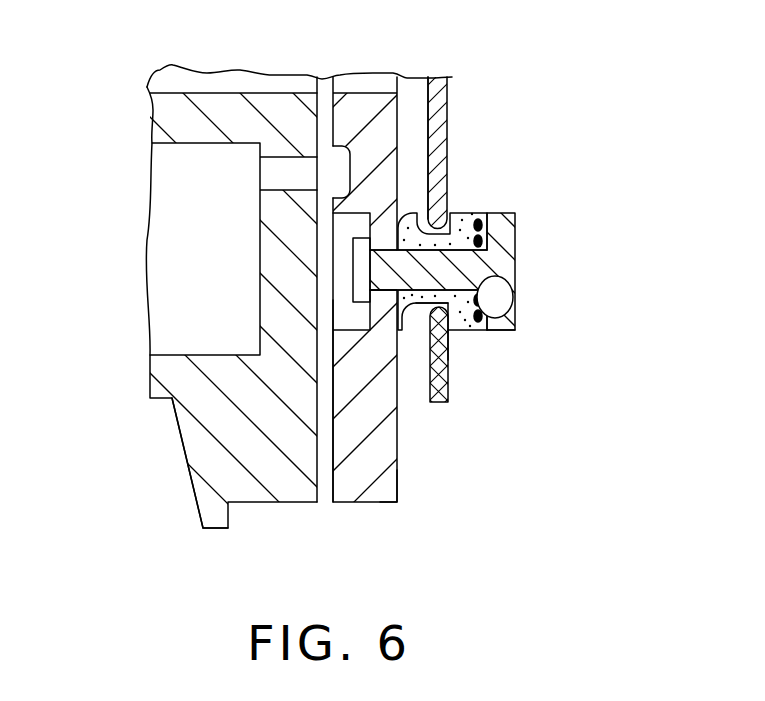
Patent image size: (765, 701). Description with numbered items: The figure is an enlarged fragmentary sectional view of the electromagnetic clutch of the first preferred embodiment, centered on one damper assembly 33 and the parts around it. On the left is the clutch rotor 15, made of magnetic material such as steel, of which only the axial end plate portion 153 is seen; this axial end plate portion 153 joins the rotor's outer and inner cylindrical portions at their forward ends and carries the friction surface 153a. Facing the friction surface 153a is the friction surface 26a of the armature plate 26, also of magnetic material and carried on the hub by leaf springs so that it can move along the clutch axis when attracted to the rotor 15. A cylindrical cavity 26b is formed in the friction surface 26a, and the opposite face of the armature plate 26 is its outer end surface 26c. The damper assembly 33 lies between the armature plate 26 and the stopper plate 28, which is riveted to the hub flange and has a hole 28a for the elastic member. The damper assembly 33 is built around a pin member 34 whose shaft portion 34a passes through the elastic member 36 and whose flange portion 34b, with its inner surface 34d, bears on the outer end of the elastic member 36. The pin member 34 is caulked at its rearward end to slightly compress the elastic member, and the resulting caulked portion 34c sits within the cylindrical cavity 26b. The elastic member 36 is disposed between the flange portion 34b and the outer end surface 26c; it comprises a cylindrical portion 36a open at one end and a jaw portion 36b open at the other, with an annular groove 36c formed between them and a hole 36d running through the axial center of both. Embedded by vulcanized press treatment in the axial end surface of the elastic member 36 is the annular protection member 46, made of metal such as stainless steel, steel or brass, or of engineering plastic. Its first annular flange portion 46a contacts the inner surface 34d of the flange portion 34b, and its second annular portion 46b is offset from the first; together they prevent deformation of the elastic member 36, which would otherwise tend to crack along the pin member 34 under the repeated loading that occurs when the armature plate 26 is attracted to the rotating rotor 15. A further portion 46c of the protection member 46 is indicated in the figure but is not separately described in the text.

The clutch rotor 15 is at (213, 540).
The armature plate 26 is at (406, 508).
The friction surface 26a is at (336, 447).
The cylindrical cavity 26b is at (368, 215).
The outer end surface 26c is at (400, 478).
The stopper plate 28 is at (453, 77).
The hole 28a is at (410, 214).
The damper assembly 33 is at (506, 205).
The pin member 34 is at (526, 275).
The shaft portion 34a is at (382, 305).
The flange portion 34b is at (484, 326).
The caulked portion 34c is at (375, 262).
The inner surface 34d is at (485, 328).
The elastic member 36 is at (470, 201).
The cylindrical portion 36a is at (463, 320).
The jaw portion 36b is at (450, 393).
The annular groove 36c is at (447, 358).
The hole 36d is at (427, 303).
The protection member 46 is at (498, 214).
The first annular flange portion 46a is at (484, 226).
The second annular portion 46b is at (484, 243).
The seal lip 46c is at (486, 298).
The axial end plate portion 153 is at (260, 465).
The friction surface 153a is at (330, 443).